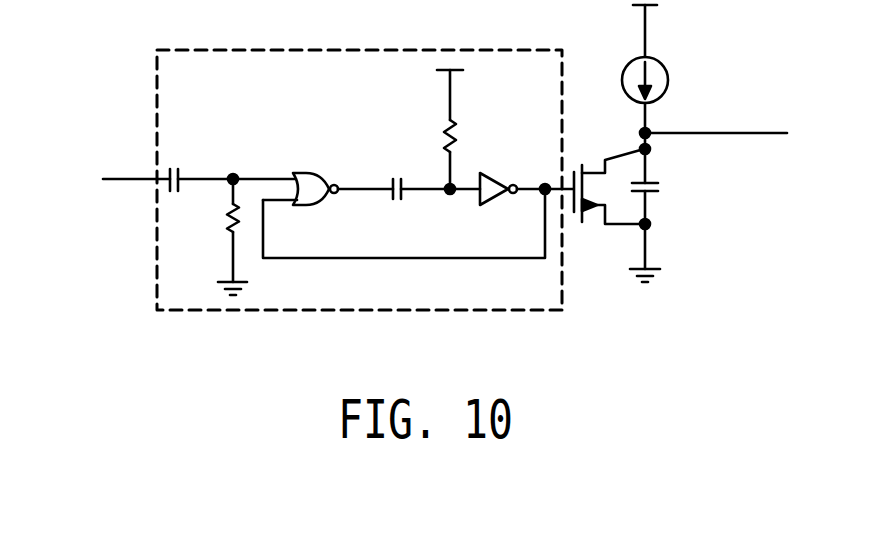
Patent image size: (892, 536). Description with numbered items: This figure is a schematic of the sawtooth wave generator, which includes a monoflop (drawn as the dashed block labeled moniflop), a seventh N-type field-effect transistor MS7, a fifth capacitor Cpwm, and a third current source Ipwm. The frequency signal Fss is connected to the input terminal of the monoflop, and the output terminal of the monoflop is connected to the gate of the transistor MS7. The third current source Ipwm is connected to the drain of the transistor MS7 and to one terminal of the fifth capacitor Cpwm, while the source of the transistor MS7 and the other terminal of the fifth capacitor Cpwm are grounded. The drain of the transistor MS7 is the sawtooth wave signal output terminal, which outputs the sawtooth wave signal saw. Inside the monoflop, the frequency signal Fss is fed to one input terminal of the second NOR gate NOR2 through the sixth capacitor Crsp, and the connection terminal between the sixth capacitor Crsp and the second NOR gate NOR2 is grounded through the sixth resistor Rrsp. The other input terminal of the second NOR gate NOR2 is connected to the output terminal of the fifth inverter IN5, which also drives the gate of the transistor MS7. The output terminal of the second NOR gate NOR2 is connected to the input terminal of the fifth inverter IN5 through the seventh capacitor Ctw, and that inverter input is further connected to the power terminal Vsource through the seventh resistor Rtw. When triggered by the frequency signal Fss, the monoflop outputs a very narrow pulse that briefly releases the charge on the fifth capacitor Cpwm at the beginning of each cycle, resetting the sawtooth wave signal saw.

The monoflop moniflop is at (359, 180).
The frequency signal Fss is at (120, 195).
The sixth capacitor Crsp is at (233, 163).
The sixth resistor Rrsp is at (210, 237).
The second NOR gate NOR2 is at (328, 168).
The seventh capacitor Ctw is at (426, 211).
The seventh resistor Rtw is at (476, 151).
The power terminal Vsource is at (487, 86).
The fifth inverter IN5 is at (526, 212).
The seventh N-type field-effect transistor MS7 is at (609, 206).
The third current source Ipwm is at (669, 85).
The sawtooth wave signal saw is at (721, 118).
The fifth capacitor Cpwm is at (676, 226).